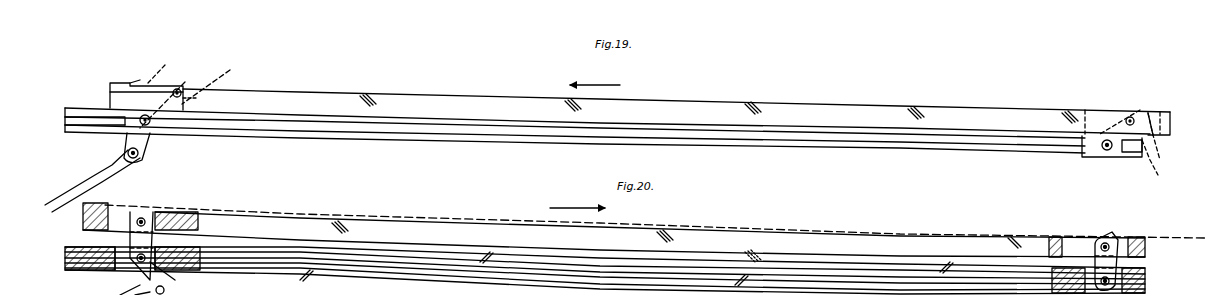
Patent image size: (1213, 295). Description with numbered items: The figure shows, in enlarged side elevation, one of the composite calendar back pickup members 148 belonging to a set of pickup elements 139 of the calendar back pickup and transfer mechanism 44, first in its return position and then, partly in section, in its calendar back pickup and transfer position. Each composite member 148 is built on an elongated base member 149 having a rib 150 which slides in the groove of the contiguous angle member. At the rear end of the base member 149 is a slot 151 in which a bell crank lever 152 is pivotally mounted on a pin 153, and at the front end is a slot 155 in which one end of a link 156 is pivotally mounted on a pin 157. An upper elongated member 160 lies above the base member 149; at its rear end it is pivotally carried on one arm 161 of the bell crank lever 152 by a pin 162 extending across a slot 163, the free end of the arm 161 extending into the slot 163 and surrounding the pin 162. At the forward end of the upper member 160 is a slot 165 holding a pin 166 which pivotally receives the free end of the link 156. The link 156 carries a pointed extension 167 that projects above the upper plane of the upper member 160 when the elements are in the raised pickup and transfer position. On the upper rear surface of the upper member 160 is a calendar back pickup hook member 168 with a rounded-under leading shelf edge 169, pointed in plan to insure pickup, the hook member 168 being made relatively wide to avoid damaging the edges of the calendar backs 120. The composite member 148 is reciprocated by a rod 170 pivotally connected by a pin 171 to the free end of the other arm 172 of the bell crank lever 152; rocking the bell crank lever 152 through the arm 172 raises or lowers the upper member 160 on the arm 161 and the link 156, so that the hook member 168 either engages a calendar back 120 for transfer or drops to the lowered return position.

In FIG. 19, the calendar back pickup and transfer mechanism 44 is at (1023, 93).
In FIG. 20, the calendar back pickup and transfer mechanism 44 is at (1002, 222).
In FIG. 20, the calendar back 120 is at (855, 228).
In FIG. 19, the set of pickup elements 139 is at (823, 92).
In FIG. 20, the set of pickup elements 139 is at (605, 270).
In FIG. 19, the composite calendar back pickup member 148 is at (412, 92).
In FIG. 20, the composite calendar back pickup member 148 is at (440, 205).
In FIG. 19, the elongated base member 149 is at (391, 137).
In FIG. 19, the rib 150 is at (78, 118).
In FIG. 20, the rib 150 is at (335, 262).
In FIG. 19, the slot 151 is at (105, 130).
In FIG. 20, the slot 151 is at (125, 265).
In FIG. 19, the bell crank lever 152 is at (152, 140).
In FIG. 20, the bell crank lever 152 is at (258, 270).
In FIG. 19, the pin 153 is at (140, 117).
In FIG. 20, the pin 153 is at (180, 272).
In FIG. 19, the slot 155 is at (1155, 162).
In FIG. 19, the link 156 is at (1113, 112).
In FIG. 20, the link 156 is at (1118, 265).
In FIG. 19, the pin 157 is at (1100, 150).
In FIG. 19, the upper elongated member 160 is at (470, 96).
In FIG. 20, the upper elongated member 160 is at (380, 230).
In FIG. 19, the arm 161 is at (183, 70).
In FIG. 20, the arm 161 is at (130, 240).
In FIG. 19, the pin 162 is at (178, 89).
In FIG. 20, the pin 162 is at (145, 218).
In FIG. 19, the slot 163 is at (200, 85).
In FIG. 20, the slot 163 is at (135, 218).
In FIG. 19, the slot 165 is at (1090, 108).
In FIG. 20, the slot 165 is at (1078, 245).
In FIG. 19, the pin 166 is at (1133, 116).
In FIG. 20, the pin 166 is at (1116, 242).
In FIG. 19, the pointed extension 167 is at (1164, 140).
In FIG. 20, the pointed extension 167 is at (1110, 234).
In FIG. 19, the calendar back pickup hook member 168 is at (128, 80).
In FIG. 19, the leading shelf edge 169 is at (163, 78).
In FIG. 19, the rod 170 is at (78, 178).
In FIG. 20, the rod 170 is at (128, 284).
In FIG. 19, the pin 171 is at (127, 153).
In FIG. 19, the arm 172 is at (150, 145).